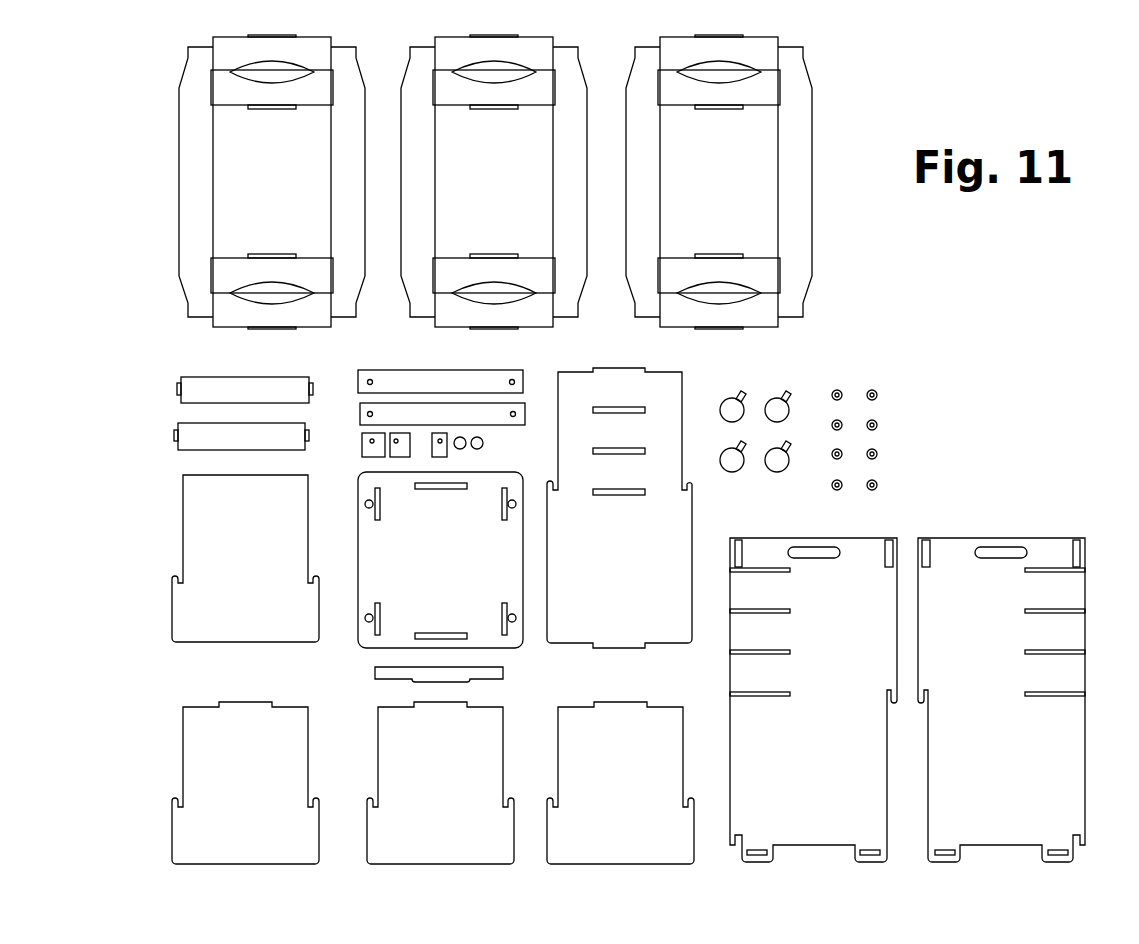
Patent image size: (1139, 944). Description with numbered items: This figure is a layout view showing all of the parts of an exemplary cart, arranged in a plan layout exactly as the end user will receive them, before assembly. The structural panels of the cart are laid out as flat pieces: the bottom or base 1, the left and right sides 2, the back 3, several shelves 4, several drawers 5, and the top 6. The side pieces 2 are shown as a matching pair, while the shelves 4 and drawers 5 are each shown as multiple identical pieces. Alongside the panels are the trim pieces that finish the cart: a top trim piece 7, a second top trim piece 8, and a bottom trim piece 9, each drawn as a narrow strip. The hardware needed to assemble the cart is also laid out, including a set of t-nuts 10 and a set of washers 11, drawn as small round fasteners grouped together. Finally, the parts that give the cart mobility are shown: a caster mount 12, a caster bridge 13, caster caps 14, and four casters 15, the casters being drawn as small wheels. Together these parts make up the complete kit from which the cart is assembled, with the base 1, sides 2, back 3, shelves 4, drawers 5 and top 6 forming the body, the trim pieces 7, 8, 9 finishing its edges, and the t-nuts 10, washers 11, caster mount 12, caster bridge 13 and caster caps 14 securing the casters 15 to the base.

The bottom or base 1 is at (440, 560).
The left and right sides 2 is at (907, 700).
The back 3 is at (619, 508).
The shelves 4 is at (433, 783).
The drawers 5 is at (495, 182).
The top 6 is at (245, 558).
The top trim piece 7 is at (245, 389).
The top trim piece 8 is at (241, 437).
The bottom trim piece 9 is at (439, 674).
The t-nut 10 is at (885, 398).
The washer 11 is at (885, 476).
The caster mount 12 is at (404, 444).
The caster bridge 13 is at (441, 397).
The caster caps 14 is at (485, 444).
The casters 15 is at (755, 431).